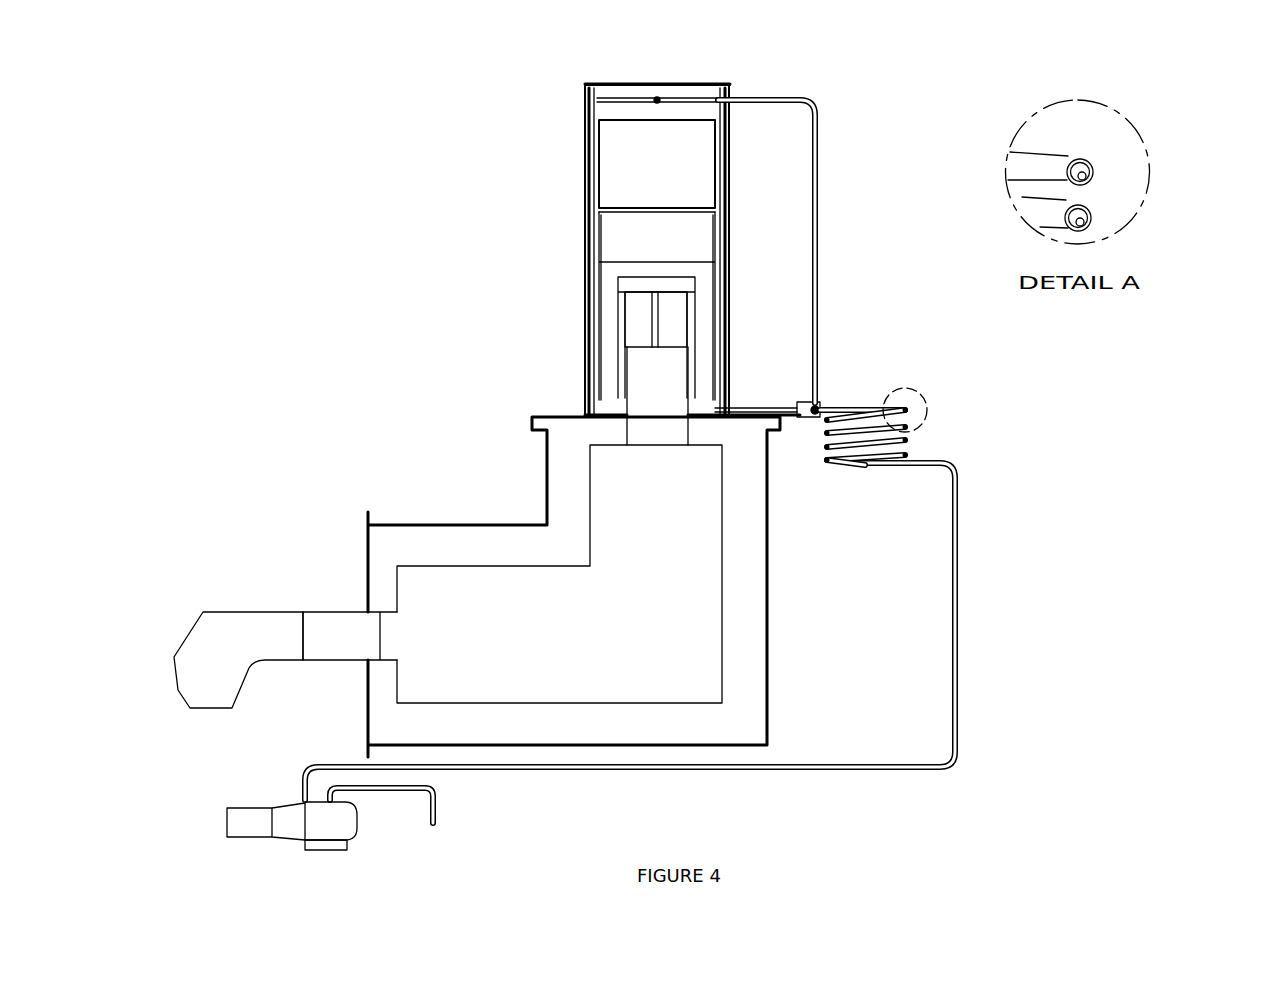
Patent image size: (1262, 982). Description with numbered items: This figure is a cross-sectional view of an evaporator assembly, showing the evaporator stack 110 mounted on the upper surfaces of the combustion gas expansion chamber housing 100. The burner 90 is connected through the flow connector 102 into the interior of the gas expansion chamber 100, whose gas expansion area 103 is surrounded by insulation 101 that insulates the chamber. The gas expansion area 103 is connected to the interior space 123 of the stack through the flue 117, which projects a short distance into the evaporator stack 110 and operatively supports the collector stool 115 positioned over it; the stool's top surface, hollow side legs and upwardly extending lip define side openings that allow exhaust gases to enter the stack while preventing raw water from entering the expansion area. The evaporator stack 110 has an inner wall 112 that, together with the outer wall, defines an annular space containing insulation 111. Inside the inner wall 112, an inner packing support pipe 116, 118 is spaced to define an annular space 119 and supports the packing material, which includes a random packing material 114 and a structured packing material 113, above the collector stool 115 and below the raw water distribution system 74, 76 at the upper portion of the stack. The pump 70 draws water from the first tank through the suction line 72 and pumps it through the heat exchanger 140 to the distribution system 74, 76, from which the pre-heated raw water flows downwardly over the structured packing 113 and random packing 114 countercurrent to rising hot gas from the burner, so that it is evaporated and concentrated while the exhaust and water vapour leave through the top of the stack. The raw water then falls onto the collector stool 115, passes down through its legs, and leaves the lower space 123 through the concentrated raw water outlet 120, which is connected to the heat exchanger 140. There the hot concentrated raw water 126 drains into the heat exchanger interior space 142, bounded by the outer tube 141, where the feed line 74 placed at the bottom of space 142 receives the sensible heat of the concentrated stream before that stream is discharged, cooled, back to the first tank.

The pump 70 is at (325, 823).
The suction line 72 is at (442, 820).
The feed line 74 is at (818, 232).
The raw water distribution system 76 is at (715, 86).
The burner 90 is at (250, 612).
The gas expansion chamber housing 100 is at (770, 590).
The insulation 101 is at (525, 545).
The flow connector 102 is at (380, 608).
The gas expansion area 103 is at (470, 610).
The evaporator stack 110 is at (730, 148).
The insulation 111 is at (594, 117).
The inner wall 112 is at (603, 85).
The structured packing material 113 is at (645, 162).
The random packing material 114 is at (655, 240).
The collector stool 115 is at (655, 283).
The inner packing support pipe 116 is at (618, 320).
The flue 117 is at (628, 400).
The inner packing support pipe 118 is at (728, 218).
The annular space 119 is at (722, 290).
The concentrated raw water outlet 120 is at (740, 408).
The lower space 123 is at (715, 350).
The hot concentrated raw water 126 is at (893, 488).
The heat exchanger 140 is at (873, 395).
The outer tube 141 is at (1082, 158).
The heat exchanger interior space 142 is at (1110, 205).